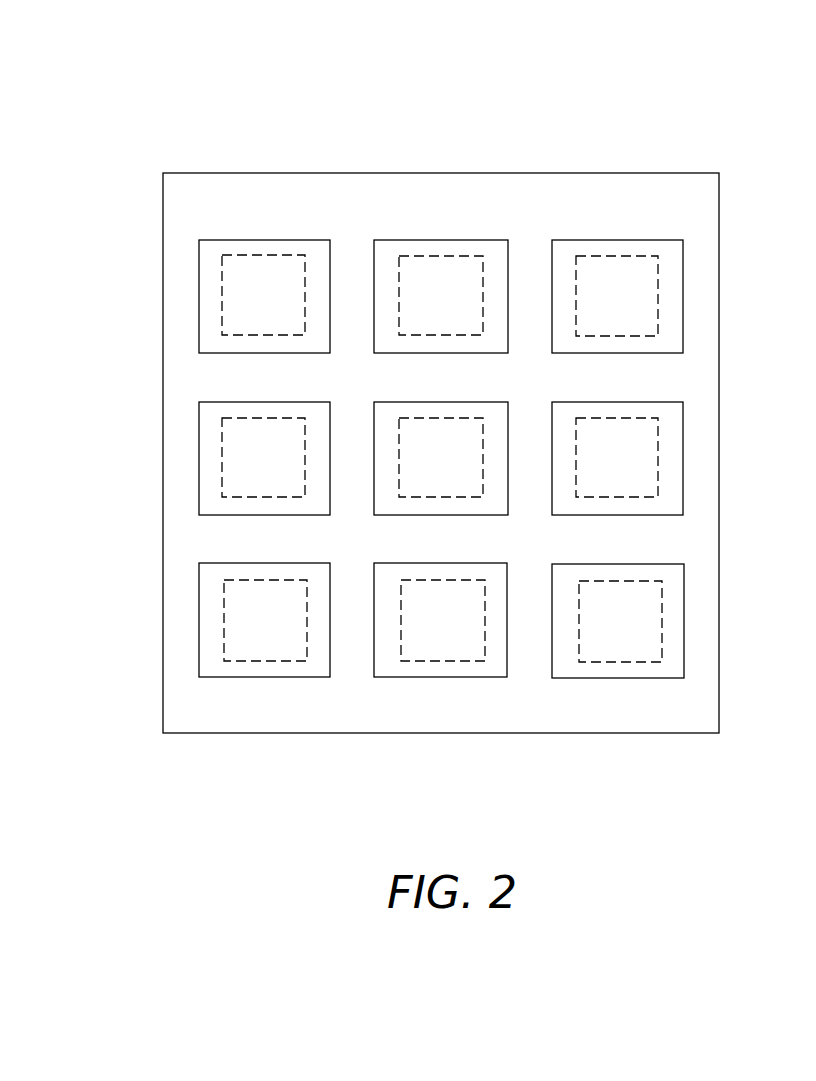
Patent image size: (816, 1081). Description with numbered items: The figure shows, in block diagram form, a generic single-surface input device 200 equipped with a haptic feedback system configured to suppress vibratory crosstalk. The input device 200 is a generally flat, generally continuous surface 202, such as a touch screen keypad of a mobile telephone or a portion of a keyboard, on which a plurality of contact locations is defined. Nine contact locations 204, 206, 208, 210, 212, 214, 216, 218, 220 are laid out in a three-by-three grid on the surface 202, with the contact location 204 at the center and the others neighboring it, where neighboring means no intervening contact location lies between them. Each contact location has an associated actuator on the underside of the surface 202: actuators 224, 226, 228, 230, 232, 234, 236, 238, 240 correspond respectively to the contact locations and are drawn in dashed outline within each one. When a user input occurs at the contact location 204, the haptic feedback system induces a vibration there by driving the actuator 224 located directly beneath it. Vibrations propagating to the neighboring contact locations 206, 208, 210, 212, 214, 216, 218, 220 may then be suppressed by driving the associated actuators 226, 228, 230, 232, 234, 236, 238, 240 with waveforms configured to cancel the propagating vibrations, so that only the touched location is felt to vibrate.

The input device 200 is at (118, 47).
The surface 202 is at (163, 370).
The contact location 204 is at (437, 402).
The contact location 206 is at (275, 402).
The contact location 208 is at (628, 402).
The contact location 210 is at (283, 240).
The contact location 212 is at (442, 240).
The contact location 214 is at (618, 240).
The contact location 216 is at (278, 563).
The contact location 218 is at (443, 563).
The contact location 220 is at (627, 564).
The actuator 224 is at (421, 468).
The actuator 226 is at (284, 468).
The actuator 228 is at (597, 468).
The actuator 230 is at (284, 305).
The actuator 232 is at (421, 306).
The actuator 234 is at (597, 306).
The actuator 236 is at (286, 630).
The actuator 238 is at (423, 630).
The actuator 240 is at (600, 632).